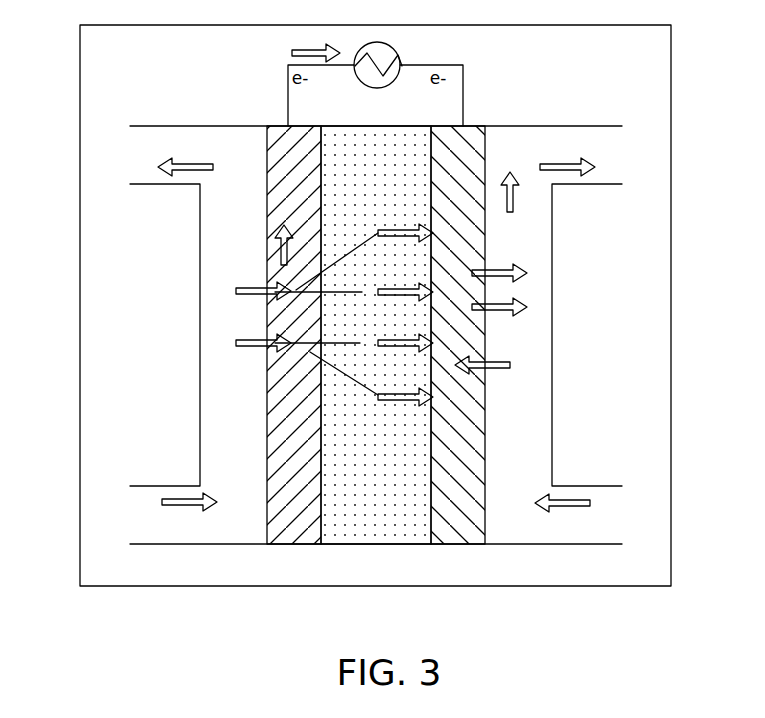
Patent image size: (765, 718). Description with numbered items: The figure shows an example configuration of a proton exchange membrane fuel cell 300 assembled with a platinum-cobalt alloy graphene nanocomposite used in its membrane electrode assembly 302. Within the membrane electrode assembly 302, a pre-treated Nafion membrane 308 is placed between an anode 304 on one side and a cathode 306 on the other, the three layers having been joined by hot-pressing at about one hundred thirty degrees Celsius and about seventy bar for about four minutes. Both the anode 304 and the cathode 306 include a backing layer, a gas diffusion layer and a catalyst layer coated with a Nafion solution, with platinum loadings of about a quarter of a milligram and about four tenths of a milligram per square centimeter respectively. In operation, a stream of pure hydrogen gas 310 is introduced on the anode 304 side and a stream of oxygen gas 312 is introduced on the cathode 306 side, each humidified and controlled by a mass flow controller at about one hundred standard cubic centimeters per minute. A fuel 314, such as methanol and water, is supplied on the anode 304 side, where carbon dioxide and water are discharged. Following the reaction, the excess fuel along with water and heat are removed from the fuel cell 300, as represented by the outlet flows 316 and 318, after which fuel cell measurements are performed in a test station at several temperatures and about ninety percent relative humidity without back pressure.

The PEMFC 300 is at (686, 110).
The membrane electrode assembly 302 is at (330, 565).
The anode 304 is at (268, 542).
The cathode 306 is at (460, 528).
The pre-treated Nafion 212 CS membrane 308 is at (406, 520).
The hydrogen gas 310 is at (245, 346).
The oxygen gas 312 is at (512, 366).
The fuel 314 is at (165, 500).
The removed excess fuel, water and heat 316 is at (183, 170).
The removed excess fuel, water and heat 318 is at (552, 167).